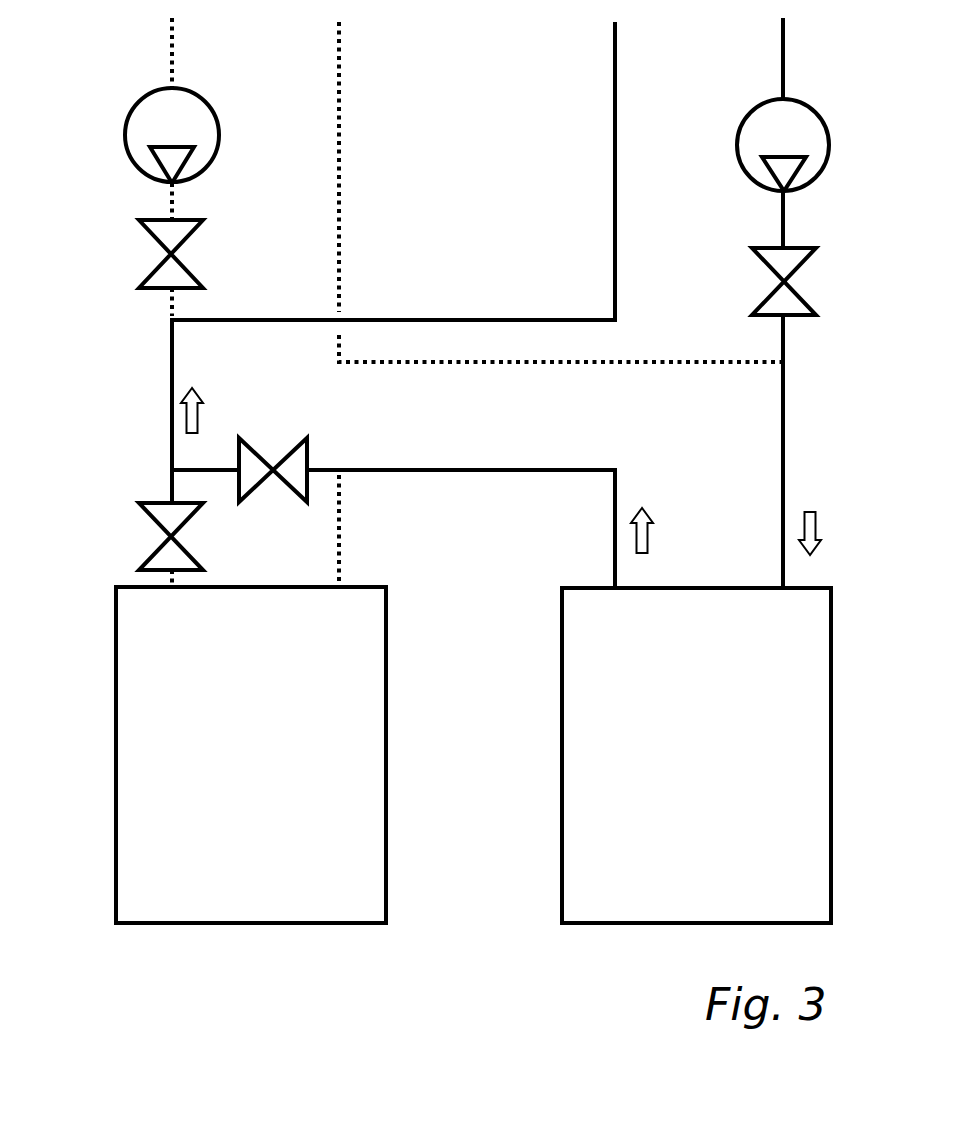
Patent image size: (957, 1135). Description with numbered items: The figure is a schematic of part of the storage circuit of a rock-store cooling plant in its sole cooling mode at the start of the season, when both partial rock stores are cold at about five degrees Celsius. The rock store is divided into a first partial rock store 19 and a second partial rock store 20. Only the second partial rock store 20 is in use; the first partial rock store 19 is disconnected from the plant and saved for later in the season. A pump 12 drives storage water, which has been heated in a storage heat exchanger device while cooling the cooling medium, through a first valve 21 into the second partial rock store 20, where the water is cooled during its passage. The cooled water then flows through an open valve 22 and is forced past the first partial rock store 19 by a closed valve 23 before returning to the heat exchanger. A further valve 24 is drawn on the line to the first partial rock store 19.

The pump 12 is at (150, 125).
The first partial rock store 19 is at (182, 900).
The second partial rock store 20 is at (630, 877).
The first valve 21 is at (790, 303).
The open valve 22 is at (288, 460).
The closed valve 23 is at (177, 516).
The valve 24 is at (167, 238).